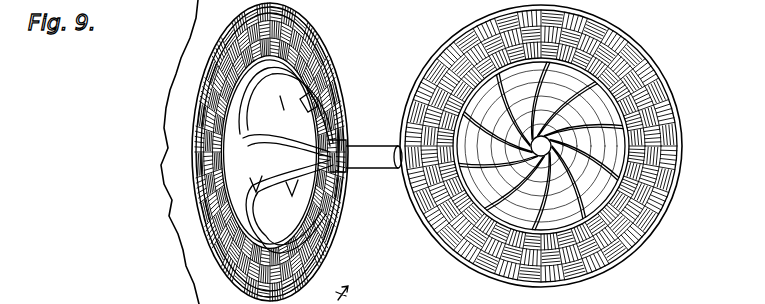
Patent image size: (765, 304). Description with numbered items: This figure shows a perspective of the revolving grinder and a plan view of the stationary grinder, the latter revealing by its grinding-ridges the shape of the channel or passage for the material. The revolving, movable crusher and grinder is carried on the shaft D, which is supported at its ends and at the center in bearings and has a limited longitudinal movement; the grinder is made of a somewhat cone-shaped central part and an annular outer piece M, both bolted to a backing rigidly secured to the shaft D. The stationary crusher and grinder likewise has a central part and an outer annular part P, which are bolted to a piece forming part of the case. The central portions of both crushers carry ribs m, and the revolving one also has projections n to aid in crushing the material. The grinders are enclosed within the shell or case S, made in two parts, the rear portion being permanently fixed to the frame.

The annular outer piece of the movable grinder M is at (318, 48).
The ribs m is at (366, 171).
The projections n is at (413, 160).
The shaft D is at (360, 150).
The outer annular part of the stationary grinder P is at (673, 120).
The shell or case S is at (374, 295).